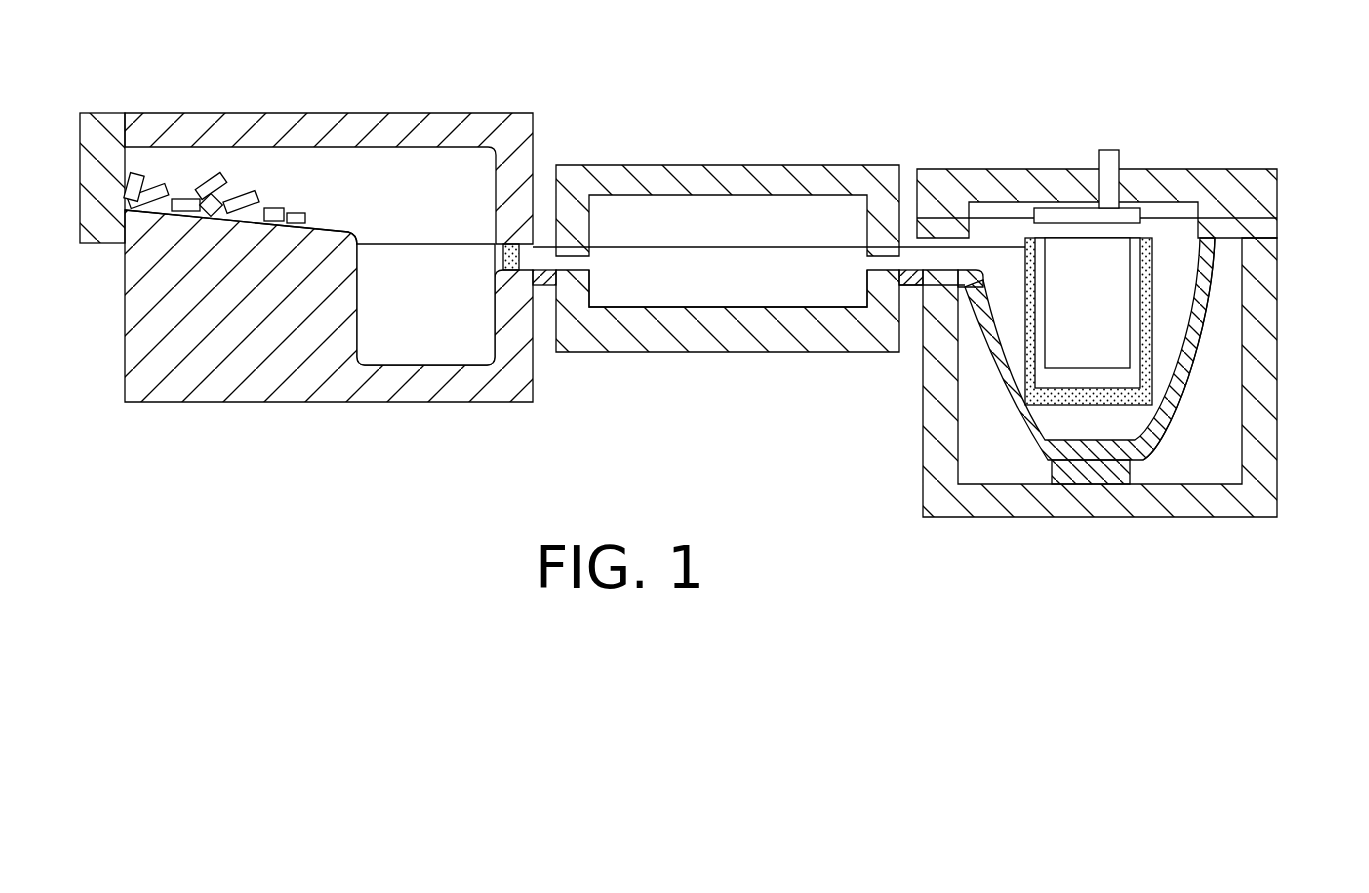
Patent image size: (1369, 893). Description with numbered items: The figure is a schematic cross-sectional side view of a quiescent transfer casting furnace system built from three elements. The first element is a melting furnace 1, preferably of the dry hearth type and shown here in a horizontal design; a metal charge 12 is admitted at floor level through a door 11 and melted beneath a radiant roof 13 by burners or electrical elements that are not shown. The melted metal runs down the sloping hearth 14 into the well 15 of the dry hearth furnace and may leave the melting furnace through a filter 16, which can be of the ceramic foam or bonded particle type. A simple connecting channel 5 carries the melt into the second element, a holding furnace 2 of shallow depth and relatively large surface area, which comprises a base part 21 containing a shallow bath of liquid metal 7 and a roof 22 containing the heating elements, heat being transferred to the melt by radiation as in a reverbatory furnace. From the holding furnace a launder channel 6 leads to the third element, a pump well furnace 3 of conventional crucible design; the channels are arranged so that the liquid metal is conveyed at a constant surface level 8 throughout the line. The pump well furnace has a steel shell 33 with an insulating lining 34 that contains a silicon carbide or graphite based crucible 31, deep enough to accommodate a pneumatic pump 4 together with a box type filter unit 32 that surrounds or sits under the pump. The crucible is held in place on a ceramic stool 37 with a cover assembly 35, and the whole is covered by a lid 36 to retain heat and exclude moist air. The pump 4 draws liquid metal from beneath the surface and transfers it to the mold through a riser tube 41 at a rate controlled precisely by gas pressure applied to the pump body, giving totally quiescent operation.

The melting furnace 1 is at (330, 383).
The door 11 is at (97, 127).
The metal charge 12 is at (170, 188).
The radiant roof 13 is at (290, 157).
The sloping hearth 14 is at (338, 230).
The well 15 is at (403, 263).
The filter 16 is at (522, 257).
The holding furnace 2 is at (727, 259).
The base part 21 is at (803, 338).
The roof 22 is at (790, 182).
The liquid metal 7 is at (630, 280).
The connecting channel 5 is at (545, 300).
The launder channel 6 is at (910, 300).
The pump well furnace 3 is at (1135, 344).
The crucible 31 is at (1163, 423).
The box type filter unit 32 is at (1150, 373).
The steel shell 33 is at (1277, 338).
The insulating lining 34 is at (1258, 263).
The cover assembly 35 is at (1262, 228).
The lid 36 is at (1262, 180).
The ceramic stool 37 is at (1090, 478).
The pneumatic pump 4 is at (1087, 313).
The constant surface level 8 is at (1170, 252).
The riser tube 41 is at (1110, 160).